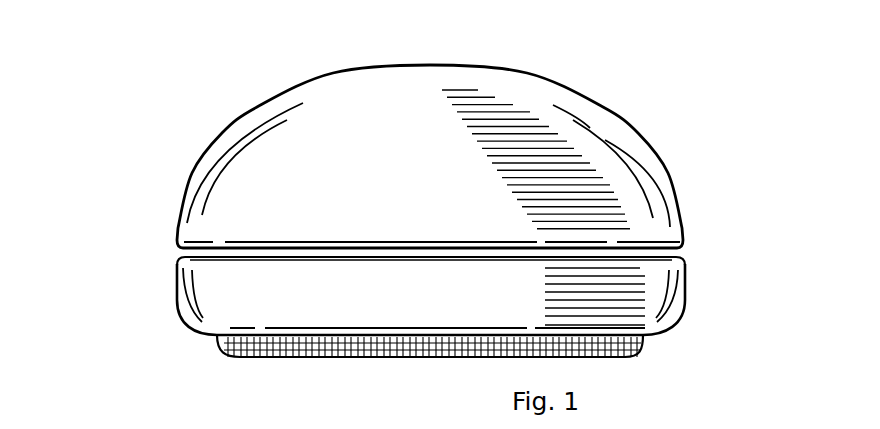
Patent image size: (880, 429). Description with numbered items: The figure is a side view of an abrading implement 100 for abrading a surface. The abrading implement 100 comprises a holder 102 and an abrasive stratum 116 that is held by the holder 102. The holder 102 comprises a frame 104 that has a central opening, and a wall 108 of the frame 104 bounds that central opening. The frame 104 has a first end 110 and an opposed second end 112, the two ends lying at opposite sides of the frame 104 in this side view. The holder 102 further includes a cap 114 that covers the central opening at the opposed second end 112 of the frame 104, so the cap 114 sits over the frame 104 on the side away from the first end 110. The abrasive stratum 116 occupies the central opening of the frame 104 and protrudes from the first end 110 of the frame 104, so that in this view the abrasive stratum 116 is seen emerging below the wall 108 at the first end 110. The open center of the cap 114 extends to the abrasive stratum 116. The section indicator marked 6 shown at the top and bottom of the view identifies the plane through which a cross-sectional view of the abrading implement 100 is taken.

The section line 6- 6 is at (419, 58).
The abrading implement 100 is at (684, 122).
The holder 102 is at (108, 91).
The frame 104 is at (740, 293).
The wall 108 is at (441, 304).
The first end 110 is at (677, 332).
The opposed second end 112 is at (692, 252).
The cap 114 is at (435, 187).
The abrasive stratum 116 is at (285, 358).